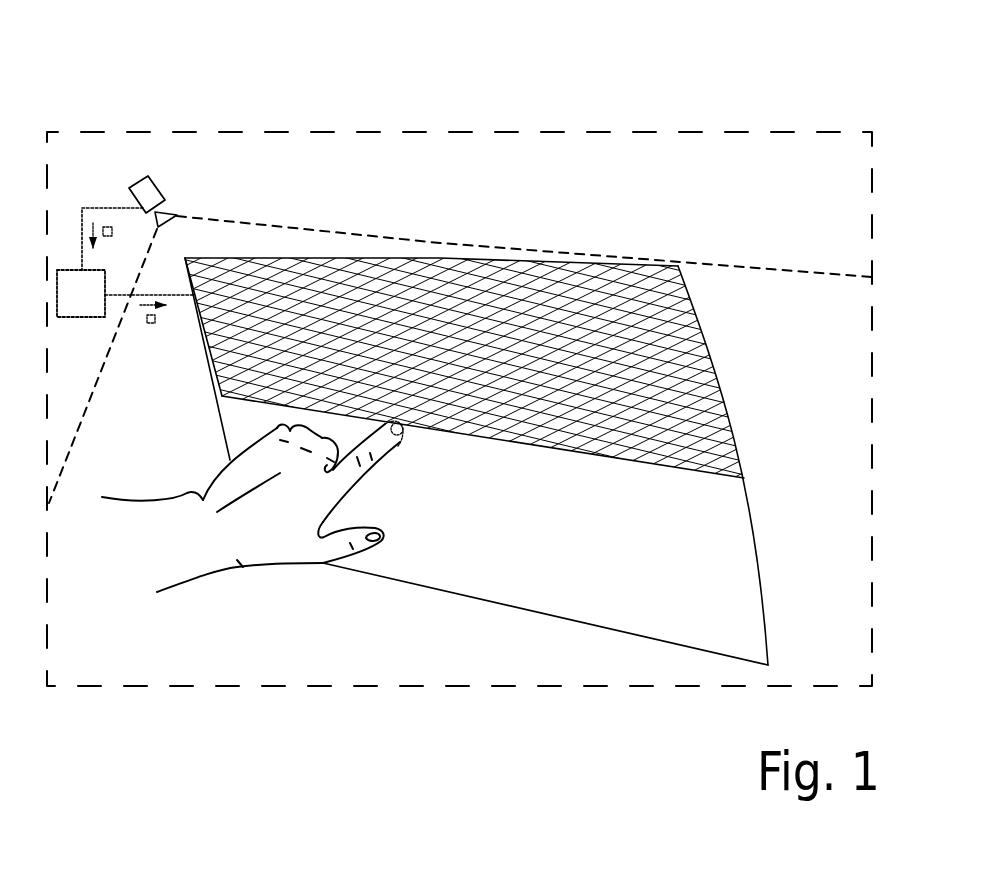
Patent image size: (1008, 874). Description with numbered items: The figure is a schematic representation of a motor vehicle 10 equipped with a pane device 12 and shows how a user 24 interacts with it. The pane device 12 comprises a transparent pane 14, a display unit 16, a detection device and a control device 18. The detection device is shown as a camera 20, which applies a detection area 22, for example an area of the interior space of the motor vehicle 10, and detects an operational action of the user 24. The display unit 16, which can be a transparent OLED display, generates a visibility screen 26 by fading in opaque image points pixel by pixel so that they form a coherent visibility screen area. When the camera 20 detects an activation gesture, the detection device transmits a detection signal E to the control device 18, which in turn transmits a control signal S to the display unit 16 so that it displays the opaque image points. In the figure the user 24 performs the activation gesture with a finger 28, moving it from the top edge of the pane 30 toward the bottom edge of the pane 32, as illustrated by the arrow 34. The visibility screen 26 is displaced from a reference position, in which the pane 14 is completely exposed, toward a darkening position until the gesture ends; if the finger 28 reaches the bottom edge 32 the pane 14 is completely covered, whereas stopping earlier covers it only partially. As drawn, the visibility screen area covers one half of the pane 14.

The motor vehicle 10 is at (688, 130).
The pane device 12 is at (240, 180).
The transparent pane 14 is at (385, 248).
The display unit 16 is at (675, 625).
The control device 18 is at (83, 318).
The camera 20 is at (141, 183).
The detection area 22 is at (316, 230).
The user 24 is at (287, 551).
The visibility screen 26 is at (560, 298).
The finger 28 is at (390, 472).
The top edge of the pane 30 is at (482, 250).
The bottom edge of the pane 32 is at (583, 625).
The arrow 34 is at (453, 445).
The detection signal E is at (113, 232).
The control signal S is at (151, 324).